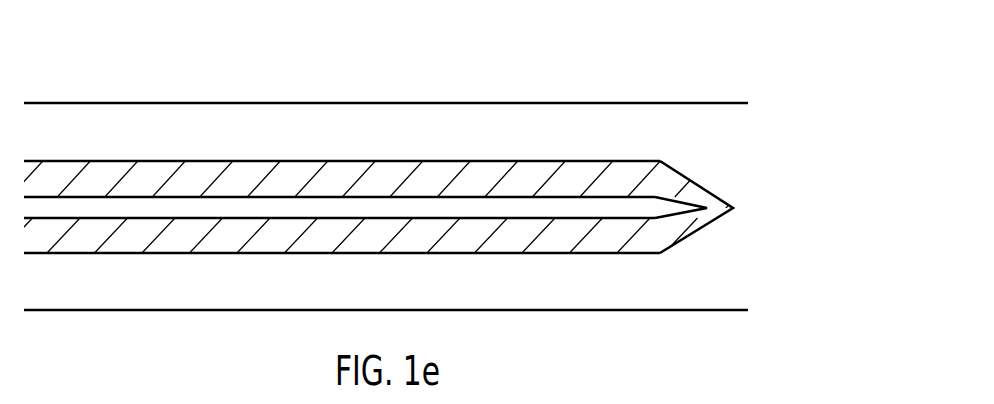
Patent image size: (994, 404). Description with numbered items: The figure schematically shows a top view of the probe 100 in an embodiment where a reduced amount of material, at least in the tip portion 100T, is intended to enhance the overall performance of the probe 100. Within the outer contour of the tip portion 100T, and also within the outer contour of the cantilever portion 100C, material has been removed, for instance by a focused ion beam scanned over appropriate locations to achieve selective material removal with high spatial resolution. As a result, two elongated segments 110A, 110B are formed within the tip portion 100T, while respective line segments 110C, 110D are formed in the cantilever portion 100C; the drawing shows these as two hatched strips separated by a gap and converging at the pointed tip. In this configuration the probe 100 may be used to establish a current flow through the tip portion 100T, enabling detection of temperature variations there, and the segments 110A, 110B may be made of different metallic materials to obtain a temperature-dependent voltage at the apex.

The probe 100 is at (764, 74).
The cantilever portion 100C is at (557, 140).
The tip portion 100T is at (701, 160).
The elongated segment 110A is at (693, 190).
The elongated segment 110B is at (695, 225).
The line segment 110C is at (300, 170).
The line segment 110D is at (227, 242).